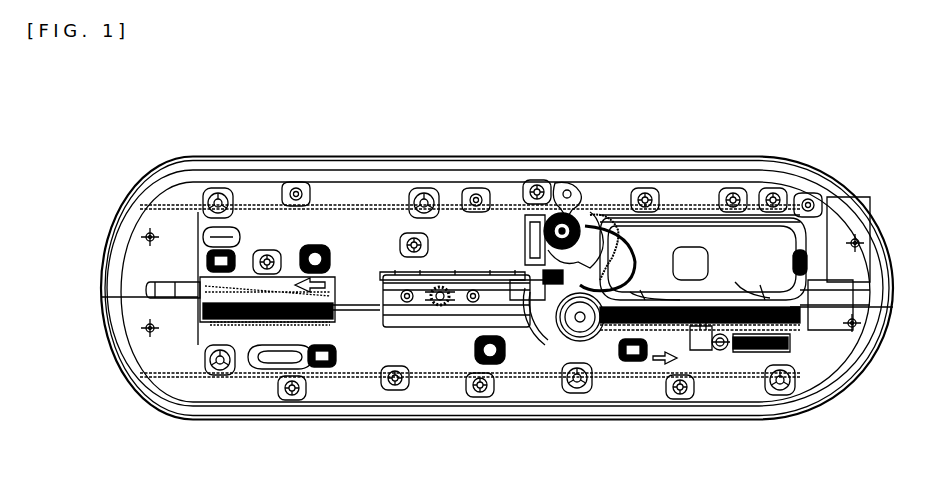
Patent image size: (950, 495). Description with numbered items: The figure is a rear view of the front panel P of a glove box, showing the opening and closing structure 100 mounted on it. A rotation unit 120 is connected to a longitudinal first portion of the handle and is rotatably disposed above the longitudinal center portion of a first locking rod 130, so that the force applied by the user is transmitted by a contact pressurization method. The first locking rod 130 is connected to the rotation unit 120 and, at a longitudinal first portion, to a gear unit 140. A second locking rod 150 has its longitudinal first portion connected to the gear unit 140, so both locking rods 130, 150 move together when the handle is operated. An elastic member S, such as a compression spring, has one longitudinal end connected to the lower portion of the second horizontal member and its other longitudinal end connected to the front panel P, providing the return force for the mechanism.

The opening and closing structure 100 is at (517, 115).
The handle housing panel P is at (368, 172).
The rotation unit 120 is at (578, 185).
The first locking rod 130 is at (696, 329).
The gear unit 140 is at (462, 336).
The second locking rod 150 is at (352, 326).
The elastic member S is at (757, 352).